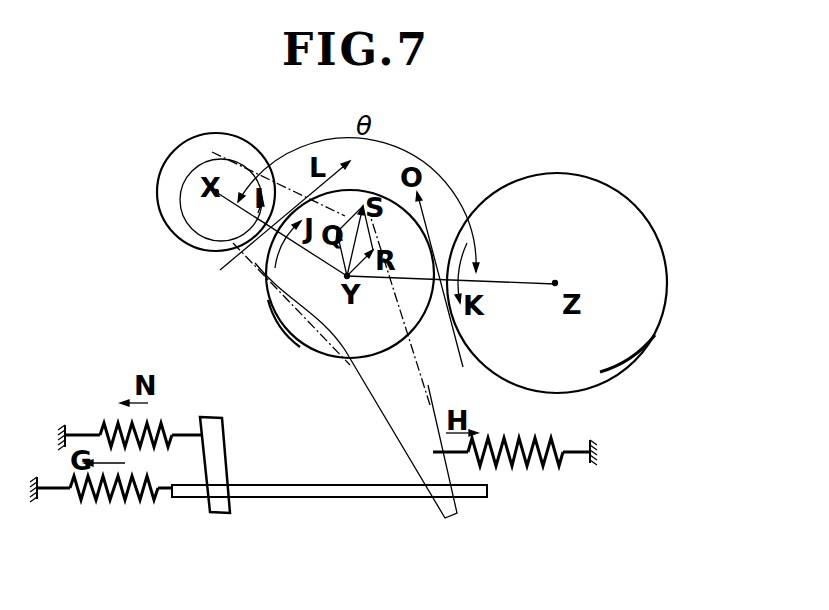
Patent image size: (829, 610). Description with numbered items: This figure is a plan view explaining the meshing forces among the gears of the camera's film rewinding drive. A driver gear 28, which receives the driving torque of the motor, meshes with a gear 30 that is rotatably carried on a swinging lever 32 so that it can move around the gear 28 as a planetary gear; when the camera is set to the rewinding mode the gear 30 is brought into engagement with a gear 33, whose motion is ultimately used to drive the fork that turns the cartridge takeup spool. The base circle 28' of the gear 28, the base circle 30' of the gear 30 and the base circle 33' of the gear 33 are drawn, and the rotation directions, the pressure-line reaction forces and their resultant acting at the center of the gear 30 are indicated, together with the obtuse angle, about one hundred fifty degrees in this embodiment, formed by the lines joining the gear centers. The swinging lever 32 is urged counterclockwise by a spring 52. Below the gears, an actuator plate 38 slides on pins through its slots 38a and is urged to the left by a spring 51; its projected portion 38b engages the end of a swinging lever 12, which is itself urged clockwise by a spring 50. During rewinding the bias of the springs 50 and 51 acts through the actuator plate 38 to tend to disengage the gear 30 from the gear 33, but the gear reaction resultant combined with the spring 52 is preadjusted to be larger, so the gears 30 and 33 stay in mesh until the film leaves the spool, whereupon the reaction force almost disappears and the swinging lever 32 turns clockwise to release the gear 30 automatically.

The gear 28 is at (203, 215).
The base circle of the gear 28 28' is at (184, 211).
The gear 30 is at (347, 297).
The base circle of the gear 30 30' is at (261, 335).
The gear 33 is at (576, 285).
The base circle of the gear 33 33' is at (633, 381).
The swinging lever 32 is at (390, 403).
The actuator plate 38 is at (330, 498).
The slots 38a is at (476, 497).
The projected portion 38b is at (187, 498).
The swinging lever 12 is at (233, 456).
The spring 50 is at (108, 428).
The spring 51 is at (105, 505).
The spring 52 is at (543, 465).